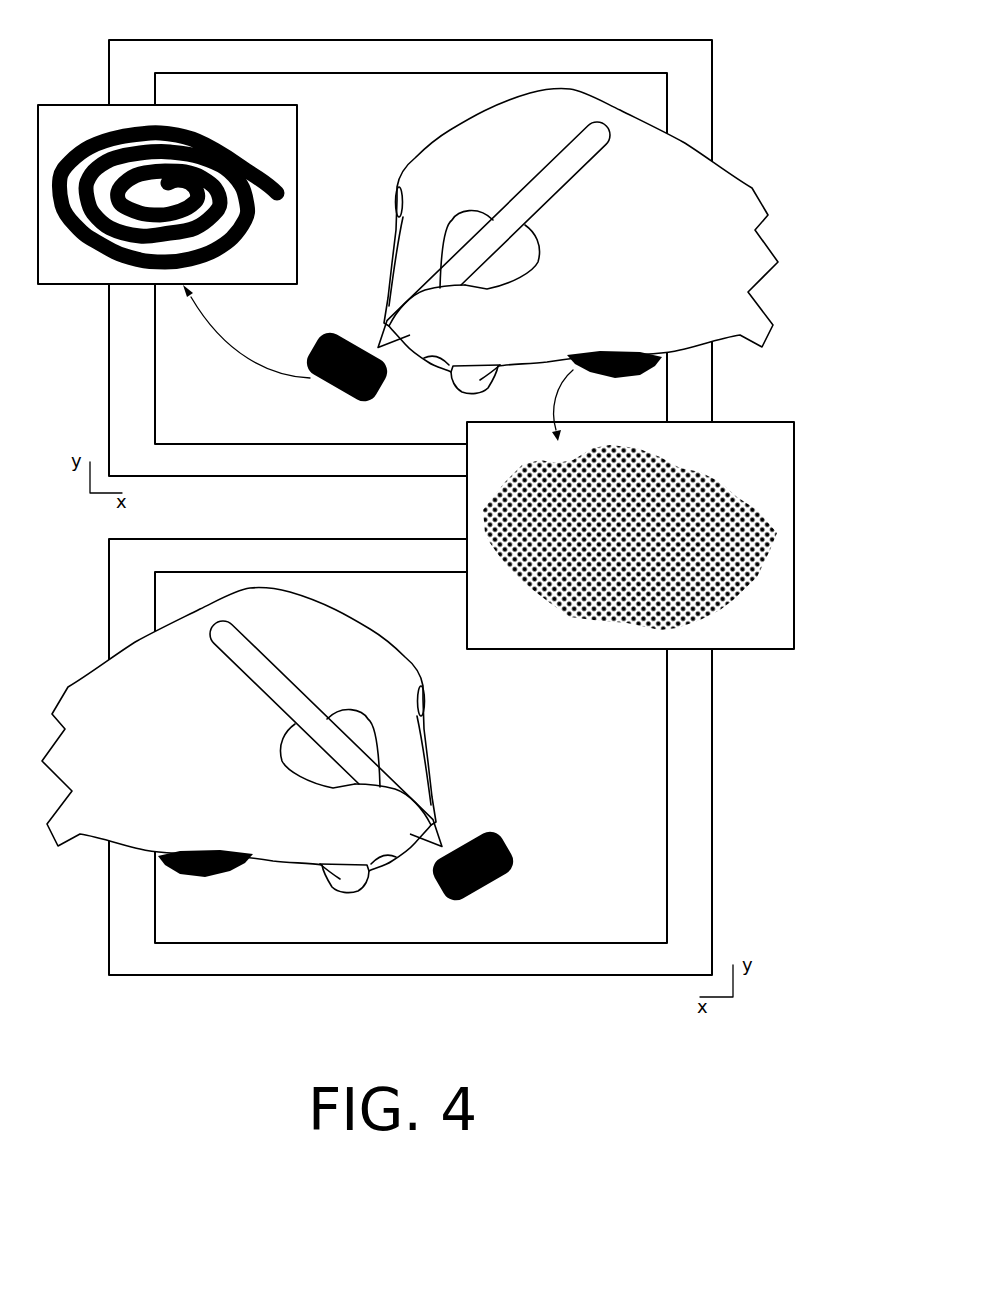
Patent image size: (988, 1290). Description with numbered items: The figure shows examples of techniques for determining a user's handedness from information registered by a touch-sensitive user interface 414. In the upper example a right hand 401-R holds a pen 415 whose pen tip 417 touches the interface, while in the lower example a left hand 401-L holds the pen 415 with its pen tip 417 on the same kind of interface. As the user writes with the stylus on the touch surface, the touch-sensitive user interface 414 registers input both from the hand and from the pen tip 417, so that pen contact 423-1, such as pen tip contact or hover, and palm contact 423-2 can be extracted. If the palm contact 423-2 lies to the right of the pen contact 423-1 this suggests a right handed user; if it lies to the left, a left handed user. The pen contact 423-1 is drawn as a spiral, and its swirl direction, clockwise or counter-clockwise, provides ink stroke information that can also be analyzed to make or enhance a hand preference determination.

The touch-sensitive user interface 414 is at (253, 40).
The pen 415 is at (555, 175).
The pen tip 417 is at (372, 345).
The right hand 401-R is at (700, 182).
The left hand 401-L is at (118, 685).
The pen contact 423-1 is at (200, 142).
The palm contact 423-2 is at (672, 468).